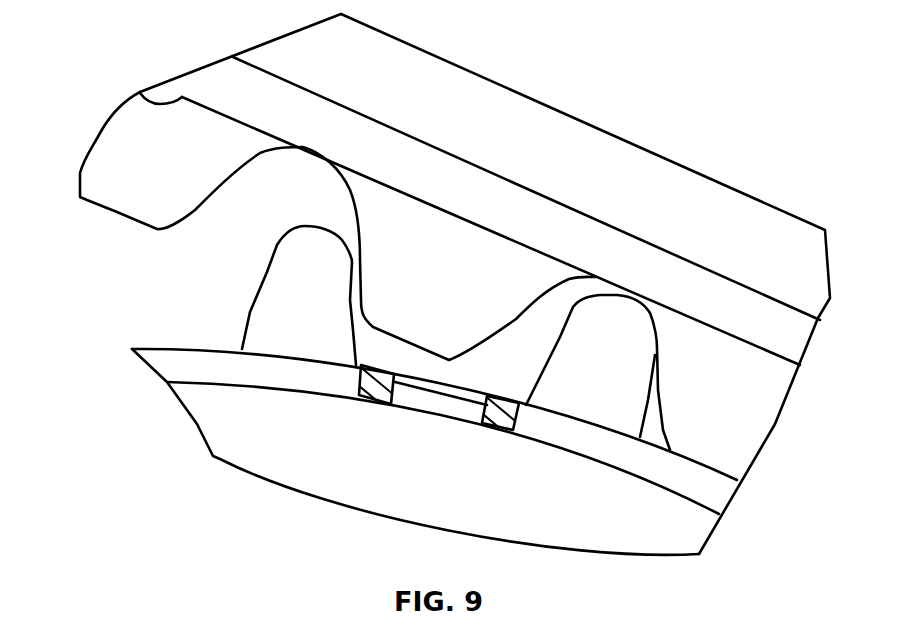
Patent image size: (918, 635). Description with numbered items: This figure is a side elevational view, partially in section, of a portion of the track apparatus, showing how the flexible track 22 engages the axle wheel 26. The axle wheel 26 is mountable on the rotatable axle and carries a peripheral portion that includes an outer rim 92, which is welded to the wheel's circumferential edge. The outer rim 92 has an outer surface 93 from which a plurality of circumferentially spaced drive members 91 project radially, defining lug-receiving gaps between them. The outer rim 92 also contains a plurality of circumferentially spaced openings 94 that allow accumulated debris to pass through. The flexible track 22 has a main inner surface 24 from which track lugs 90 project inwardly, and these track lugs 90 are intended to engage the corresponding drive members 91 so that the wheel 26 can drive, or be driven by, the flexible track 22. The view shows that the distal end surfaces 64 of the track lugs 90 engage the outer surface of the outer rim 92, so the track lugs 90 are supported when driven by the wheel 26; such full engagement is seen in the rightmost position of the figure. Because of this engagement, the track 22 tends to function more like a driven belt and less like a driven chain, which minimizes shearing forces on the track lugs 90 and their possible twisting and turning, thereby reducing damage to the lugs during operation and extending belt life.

The flexible track 22 is at (399, 45).
The main inner surface 24 is at (142, 94).
The axle wheel 26 is at (287, 466).
The distal end surface 64 is at (396, 338).
The track lug 90 is at (110, 138).
The drive member 91 is at (273, 280).
The outer rim 92 is at (722, 497).
The outer surface 93 is at (167, 346).
The opening 94 is at (484, 420).